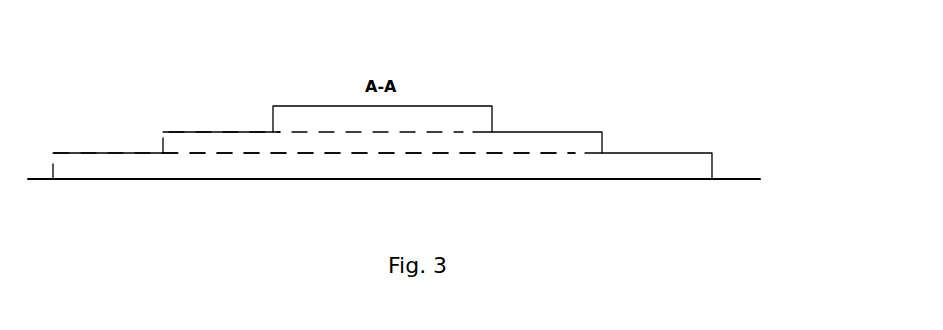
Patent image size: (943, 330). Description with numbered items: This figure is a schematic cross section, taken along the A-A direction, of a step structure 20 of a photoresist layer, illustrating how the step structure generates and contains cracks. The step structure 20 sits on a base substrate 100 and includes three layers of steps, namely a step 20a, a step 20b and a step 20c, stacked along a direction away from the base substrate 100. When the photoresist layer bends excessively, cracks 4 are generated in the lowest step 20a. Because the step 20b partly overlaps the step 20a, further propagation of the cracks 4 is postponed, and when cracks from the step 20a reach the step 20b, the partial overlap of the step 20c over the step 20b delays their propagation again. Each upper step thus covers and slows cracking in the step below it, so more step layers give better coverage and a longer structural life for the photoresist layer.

The base substrate 100 is at (755, 178).
The step structure 20 is at (410, 110).
The step 20a is at (713, 160).
The step 20b is at (603, 138).
The step 20c is at (422, 92).
The cracks 4 is at (376, 162).